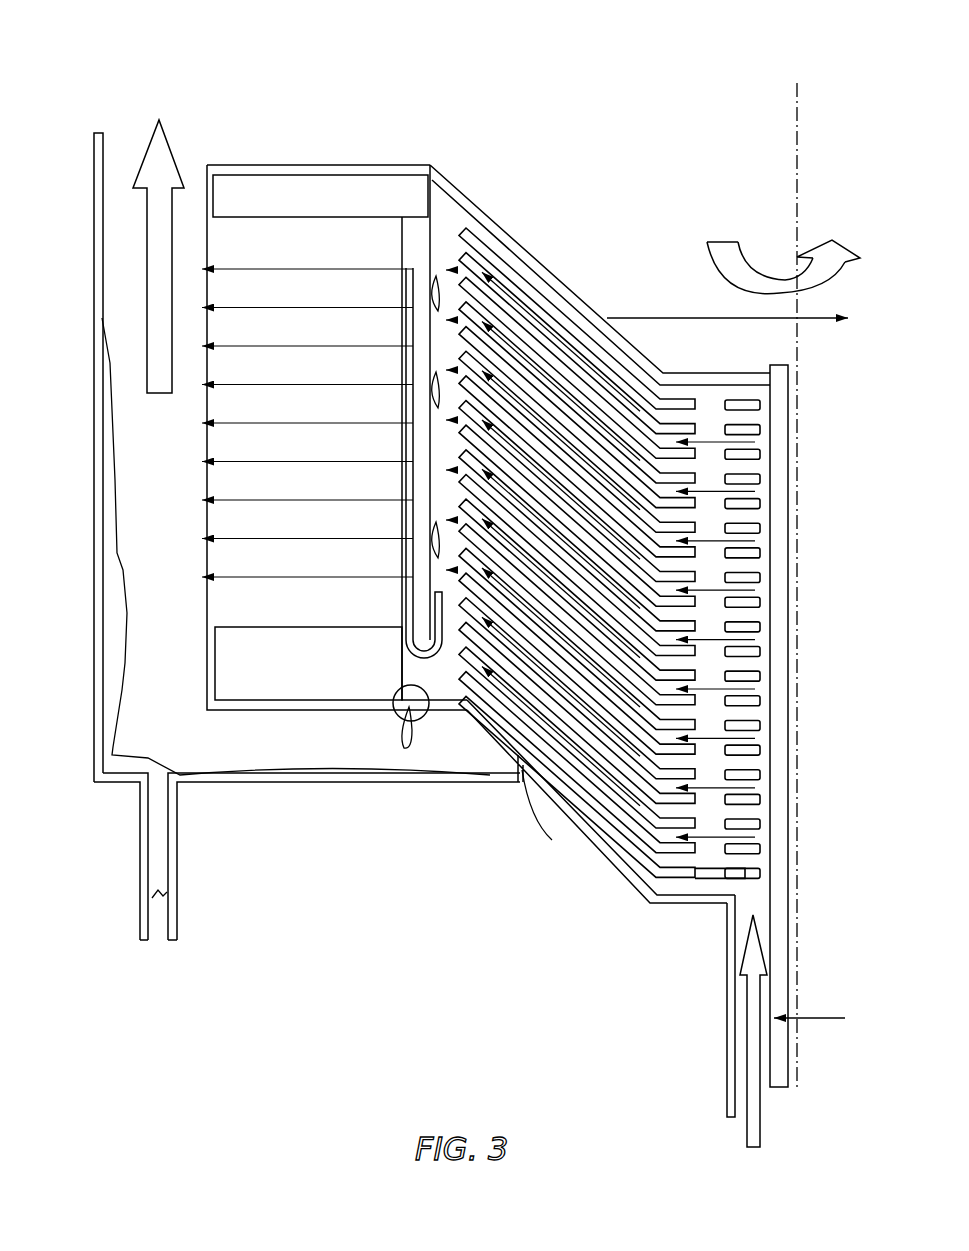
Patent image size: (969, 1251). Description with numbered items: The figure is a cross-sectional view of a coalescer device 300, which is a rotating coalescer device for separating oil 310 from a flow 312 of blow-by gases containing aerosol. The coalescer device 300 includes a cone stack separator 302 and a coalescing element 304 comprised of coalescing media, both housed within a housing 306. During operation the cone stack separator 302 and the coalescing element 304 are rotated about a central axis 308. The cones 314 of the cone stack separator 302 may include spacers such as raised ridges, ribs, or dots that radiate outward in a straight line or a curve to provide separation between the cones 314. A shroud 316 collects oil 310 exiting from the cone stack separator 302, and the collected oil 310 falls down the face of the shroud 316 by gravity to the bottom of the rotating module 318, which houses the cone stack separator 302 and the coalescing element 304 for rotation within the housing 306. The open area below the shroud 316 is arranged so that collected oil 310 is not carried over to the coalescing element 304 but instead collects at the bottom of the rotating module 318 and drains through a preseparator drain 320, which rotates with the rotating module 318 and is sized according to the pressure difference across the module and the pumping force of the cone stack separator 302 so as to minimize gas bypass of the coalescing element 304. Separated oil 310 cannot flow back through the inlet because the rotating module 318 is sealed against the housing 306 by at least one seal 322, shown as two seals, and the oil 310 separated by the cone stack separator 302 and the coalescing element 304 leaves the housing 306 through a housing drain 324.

The coalescer device 300 is at (130, 24).
The cone stack separator 302 is at (568, 324).
The coalescing element 304 is at (334, 437).
The housing 306 is at (98, 237).
The central axis 308 is at (796, 165).
The oil 310 is at (113, 673).
The flow of blow-by gases 312 is at (162, 165).
The cones 314 is at (766, 455).
The shroud 316 is at (440, 220).
The rotating module 318 is at (532, 252).
The preseparator drain 320 is at (409, 707).
The seal 322 is at (648, 892).
The housing drain 324 is at (170, 850).